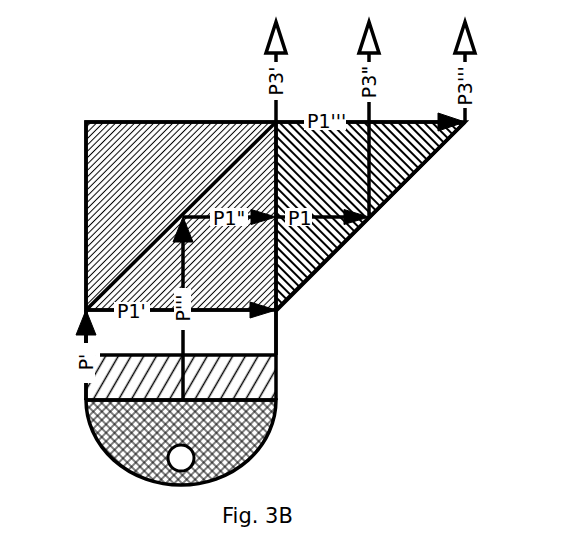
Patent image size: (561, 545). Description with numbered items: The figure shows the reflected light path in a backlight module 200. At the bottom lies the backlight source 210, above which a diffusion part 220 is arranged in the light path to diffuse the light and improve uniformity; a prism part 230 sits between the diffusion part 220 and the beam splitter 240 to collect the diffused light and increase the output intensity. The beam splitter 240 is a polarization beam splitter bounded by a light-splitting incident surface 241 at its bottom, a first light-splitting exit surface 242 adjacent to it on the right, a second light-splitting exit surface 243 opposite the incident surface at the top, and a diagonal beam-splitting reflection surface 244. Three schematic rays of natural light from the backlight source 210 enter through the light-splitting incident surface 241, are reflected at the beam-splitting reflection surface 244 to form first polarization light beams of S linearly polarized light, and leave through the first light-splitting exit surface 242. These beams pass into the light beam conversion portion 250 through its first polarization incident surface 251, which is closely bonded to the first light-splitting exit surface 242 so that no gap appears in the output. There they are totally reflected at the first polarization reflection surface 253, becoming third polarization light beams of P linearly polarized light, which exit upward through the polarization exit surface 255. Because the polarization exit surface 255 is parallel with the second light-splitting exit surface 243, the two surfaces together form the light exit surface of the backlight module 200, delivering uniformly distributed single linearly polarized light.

The backlight module 200 is at (70, 112).
The backlight source 210 is at (181, 442).
The diffusion part 220 is at (181, 377).
The prism part 230 is at (181, 332).
The beam splitter 240 is at (181, 216).
The light-splitting incident surface 241 is at (181, 300).
The first light-splitting exit surface 242 is at (181, 216).
The second light-splitting exit surface 243 is at (181, 216).
The beam-splitting reflection surface 244 is at (181, 216).
The light beam conversion portion 250 is at (370, 216).
The first polarization incident surface 251 is at (297, 216).
The first polarization reflection surface 253 is at (370, 216).
The polarization exit surface 255 is at (370, 130).